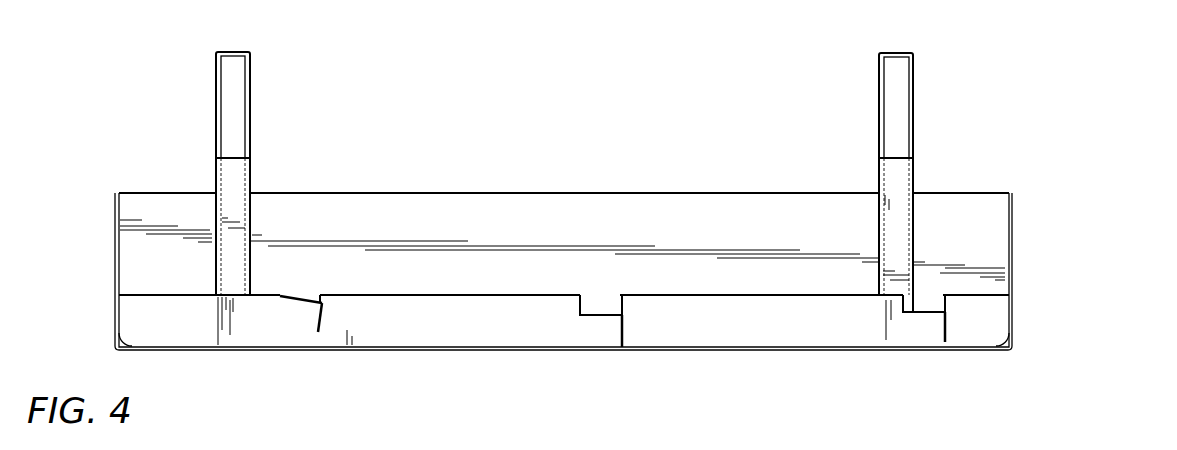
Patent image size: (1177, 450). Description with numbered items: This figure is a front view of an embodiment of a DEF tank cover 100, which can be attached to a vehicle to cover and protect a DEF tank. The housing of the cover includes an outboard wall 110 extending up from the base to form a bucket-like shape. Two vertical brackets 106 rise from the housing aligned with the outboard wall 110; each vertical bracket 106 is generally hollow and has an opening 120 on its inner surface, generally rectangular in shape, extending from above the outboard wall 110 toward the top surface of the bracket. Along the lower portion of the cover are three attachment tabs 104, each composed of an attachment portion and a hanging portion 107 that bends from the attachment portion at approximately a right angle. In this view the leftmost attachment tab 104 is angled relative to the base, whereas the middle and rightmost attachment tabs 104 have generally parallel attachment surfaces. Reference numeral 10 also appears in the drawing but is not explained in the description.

The assembly 100 is at (1067, 176).
The housing 110 is at (548, 205).
The protrusion 106 is at (250, 63).
The window 120 is at (237, 117).
The notch 104 is at (303, 302).
The hook 107 is at (324, 318).
The device 10 is at (307, 296).